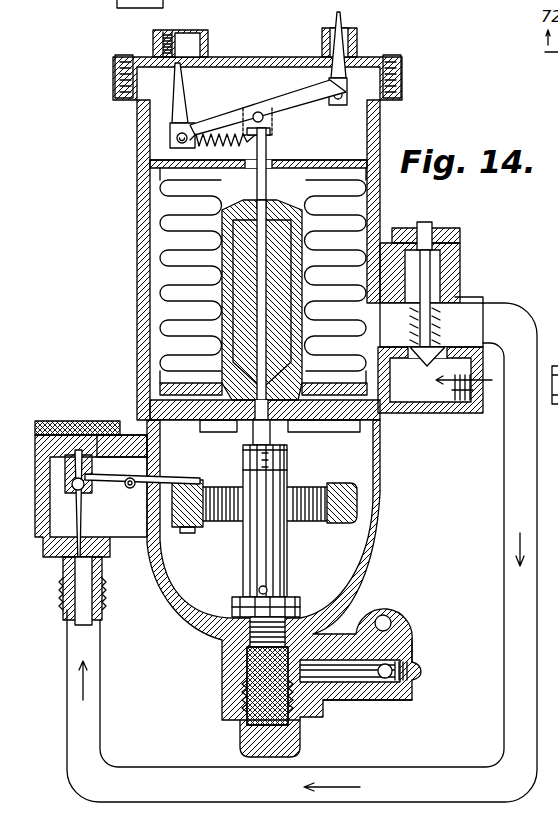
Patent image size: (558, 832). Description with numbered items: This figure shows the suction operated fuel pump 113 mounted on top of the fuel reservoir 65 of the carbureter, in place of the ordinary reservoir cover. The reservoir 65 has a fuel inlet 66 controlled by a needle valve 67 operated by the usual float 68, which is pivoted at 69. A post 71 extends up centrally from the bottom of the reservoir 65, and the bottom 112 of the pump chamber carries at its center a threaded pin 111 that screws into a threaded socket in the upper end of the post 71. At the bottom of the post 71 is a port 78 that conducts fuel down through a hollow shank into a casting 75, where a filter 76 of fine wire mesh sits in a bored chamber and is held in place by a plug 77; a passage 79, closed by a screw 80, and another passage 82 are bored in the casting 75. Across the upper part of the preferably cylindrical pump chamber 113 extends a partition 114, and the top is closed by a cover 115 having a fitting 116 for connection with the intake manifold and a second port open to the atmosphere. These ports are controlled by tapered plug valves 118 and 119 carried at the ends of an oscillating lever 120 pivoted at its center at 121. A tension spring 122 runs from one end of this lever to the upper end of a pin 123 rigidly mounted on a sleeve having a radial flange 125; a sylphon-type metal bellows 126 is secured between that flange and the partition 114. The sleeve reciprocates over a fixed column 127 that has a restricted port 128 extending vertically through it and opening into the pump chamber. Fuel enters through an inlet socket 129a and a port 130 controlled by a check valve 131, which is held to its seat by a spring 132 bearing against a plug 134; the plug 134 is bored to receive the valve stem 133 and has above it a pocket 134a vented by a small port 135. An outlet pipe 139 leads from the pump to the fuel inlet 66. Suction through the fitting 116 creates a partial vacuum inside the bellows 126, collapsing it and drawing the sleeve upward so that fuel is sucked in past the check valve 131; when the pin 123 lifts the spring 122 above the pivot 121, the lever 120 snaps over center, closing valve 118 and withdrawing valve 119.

The fuel reservoir 65 is at (387, 500).
The fuel inlet 66 is at (67, 593).
The needle valve 67 is at (77, 530).
The float 68 is at (333, 483).
The float pivot 69 is at (130, 490).
The post 71 is at (257, 546).
The casting 75 is at (372, 693).
The filter 76 is at (263, 668).
The plug 77 is at (247, 743).
The port 78 is at (258, 593).
The communicating passage 79 is at (343, 680).
The screw 80 is at (417, 672).
The passage 82 is at (391, 624).
The threaded pin 111 is at (278, 440).
The bottom of the pump chamber 112 is at (185, 421).
The suction operated fuel pump 113 is at (140, 297).
The partition 114 is at (315, 148).
The cover 115 is at (250, 58).
The fitting 116 is at (188, 40).
The tapered plug valve 118 is at (178, 107).
The tapered plug valve 119 is at (345, 55).
The oscillating lever 120 is at (300, 110).
The lever pivot 121 is at (262, 112).
The tension spring 122 is at (220, 133).
The pin or post 123 is at (260, 173).
The radial flange 125 is at (173, 397).
The bellows 126 is at (168, 227).
The fixed column 127 is at (287, 240).
The restricted port 128 is at (263, 313).
The inlet socket 129a is at (458, 412).
The inlet port 130 is at (417, 363).
The check valve 131 is at (438, 347).
The spring 132 is at (438, 323).
The valve stem 133 is at (440, 270).
The plug 134 is at (450, 233).
The chamber or pocket 134a is at (413, 230).
The vent port 135 is at (420, 230).
The outlet pipe 139 is at (515, 521).